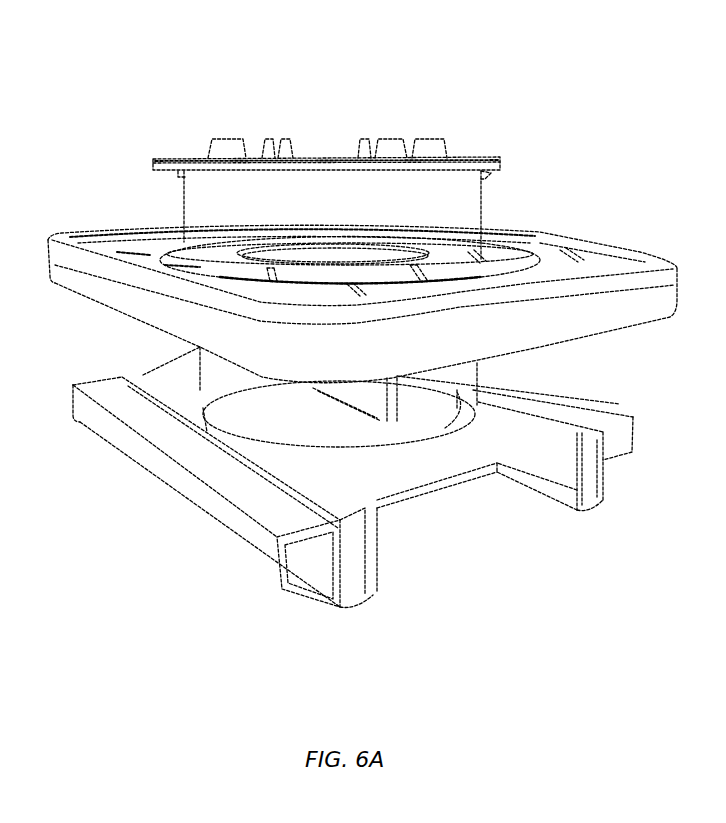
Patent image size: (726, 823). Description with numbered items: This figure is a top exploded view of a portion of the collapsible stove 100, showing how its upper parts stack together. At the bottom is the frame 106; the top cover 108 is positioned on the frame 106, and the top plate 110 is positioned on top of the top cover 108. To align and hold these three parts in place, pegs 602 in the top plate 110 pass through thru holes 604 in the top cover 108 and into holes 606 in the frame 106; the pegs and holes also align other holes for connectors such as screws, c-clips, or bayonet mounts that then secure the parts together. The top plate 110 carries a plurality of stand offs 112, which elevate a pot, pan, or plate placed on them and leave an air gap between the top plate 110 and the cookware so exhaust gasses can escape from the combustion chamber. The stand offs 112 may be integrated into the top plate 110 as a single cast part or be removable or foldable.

The collapsible stove 100 is at (108, 44).
The frame 106 is at (458, 484).
The top cover 108 is at (624, 247).
The top plate 110 is at (486, 156).
The stand offs 112 is at (232, 137).
The pegs 602 is at (182, 176).
The thru holes 604 is at (192, 249).
The holes 606 is at (199, 393).